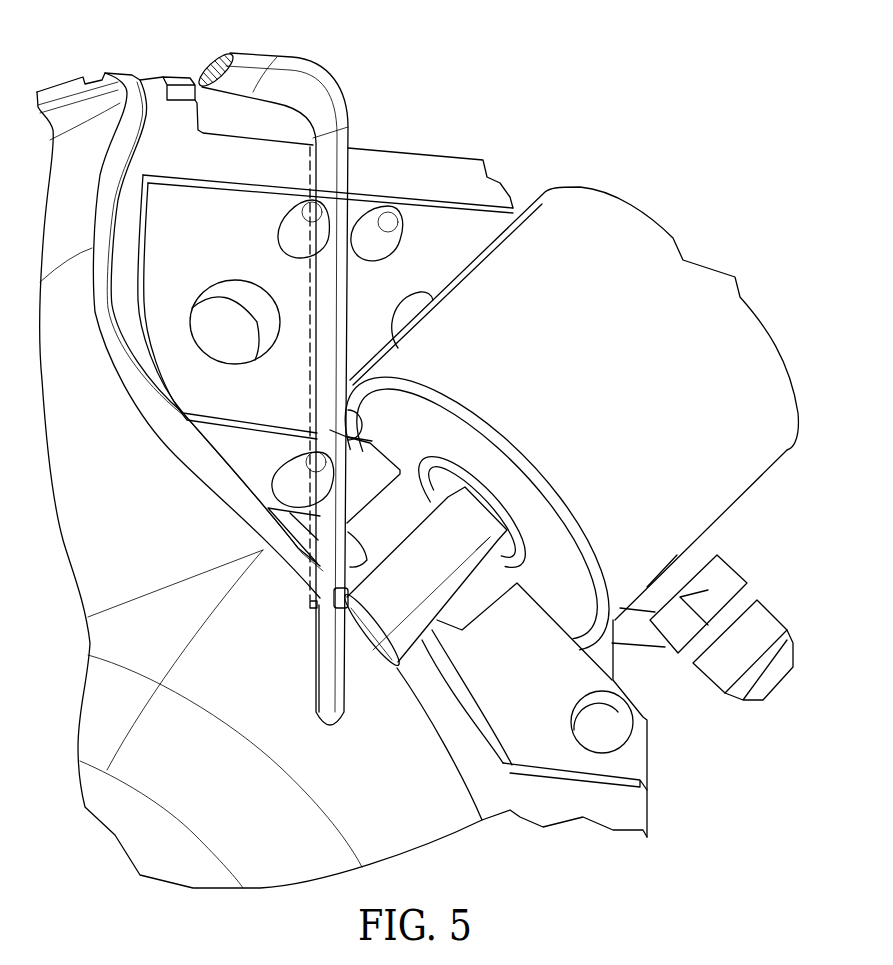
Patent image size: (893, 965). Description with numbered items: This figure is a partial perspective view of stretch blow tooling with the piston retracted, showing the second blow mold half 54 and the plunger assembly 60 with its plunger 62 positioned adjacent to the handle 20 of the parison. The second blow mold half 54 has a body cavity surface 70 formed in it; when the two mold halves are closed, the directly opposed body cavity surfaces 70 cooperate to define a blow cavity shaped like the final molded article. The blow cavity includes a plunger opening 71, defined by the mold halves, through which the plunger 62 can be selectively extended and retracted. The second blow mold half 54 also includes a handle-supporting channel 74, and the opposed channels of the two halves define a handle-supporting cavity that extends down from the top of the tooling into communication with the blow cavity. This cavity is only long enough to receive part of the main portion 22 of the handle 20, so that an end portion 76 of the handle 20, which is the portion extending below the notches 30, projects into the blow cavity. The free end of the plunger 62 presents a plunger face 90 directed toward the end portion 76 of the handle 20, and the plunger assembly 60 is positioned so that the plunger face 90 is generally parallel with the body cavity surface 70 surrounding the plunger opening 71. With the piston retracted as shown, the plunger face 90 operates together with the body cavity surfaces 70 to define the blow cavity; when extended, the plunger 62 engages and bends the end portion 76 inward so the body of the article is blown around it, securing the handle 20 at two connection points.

The handle 20 is at (272, 396).
The main portion 22 is at (327, 370).
The notches 30 is at (285, 650).
The second blow mold half 54 is at (149, 88).
The plunger assembly 60 is at (735, 533).
The plunger 62 is at (427, 619).
The body cavity surface 70 is at (128, 573).
The plunger opening 71 is at (393, 667).
The handle-supporting channel 74 is at (310, 603).
The end portion 76 is at (315, 647).
The plunger face 90 is at (382, 656).